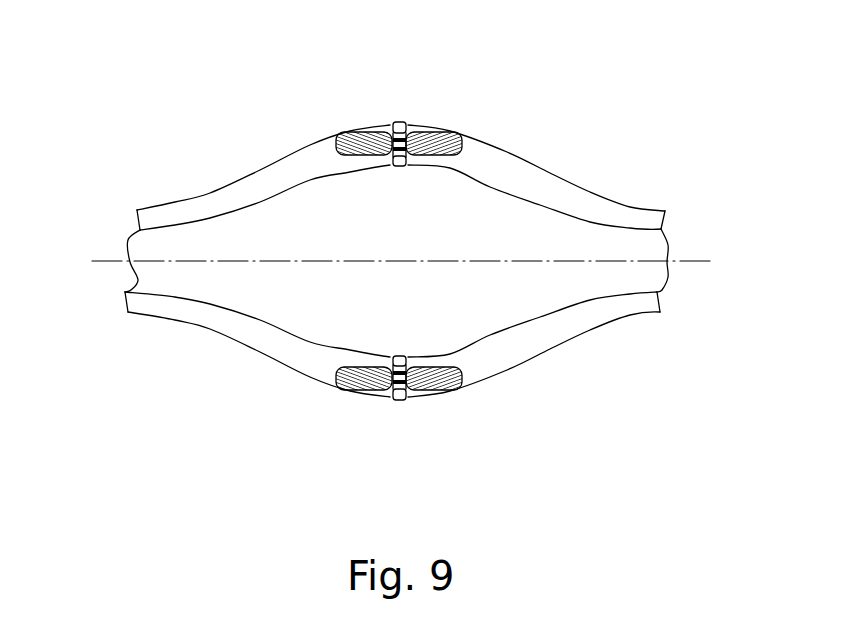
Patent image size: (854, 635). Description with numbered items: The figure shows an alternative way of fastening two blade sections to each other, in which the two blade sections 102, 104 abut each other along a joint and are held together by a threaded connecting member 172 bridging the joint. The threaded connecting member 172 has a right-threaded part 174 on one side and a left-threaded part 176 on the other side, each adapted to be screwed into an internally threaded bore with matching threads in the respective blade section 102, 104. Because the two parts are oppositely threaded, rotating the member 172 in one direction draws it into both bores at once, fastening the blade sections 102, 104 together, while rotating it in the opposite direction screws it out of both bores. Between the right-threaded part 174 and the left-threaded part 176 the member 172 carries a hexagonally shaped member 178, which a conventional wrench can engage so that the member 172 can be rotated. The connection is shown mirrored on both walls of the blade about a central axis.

The blade section 102 is at (288, 173).
The blade section 104 is at (540, 182).
The threaded connecting member 172 is at (398, 263).
The right-threaded part 174 is at (348, 132).
The left-threaded part 176 is at (443, 133).
The hexagonally shaped member 178 is at (398, 120).